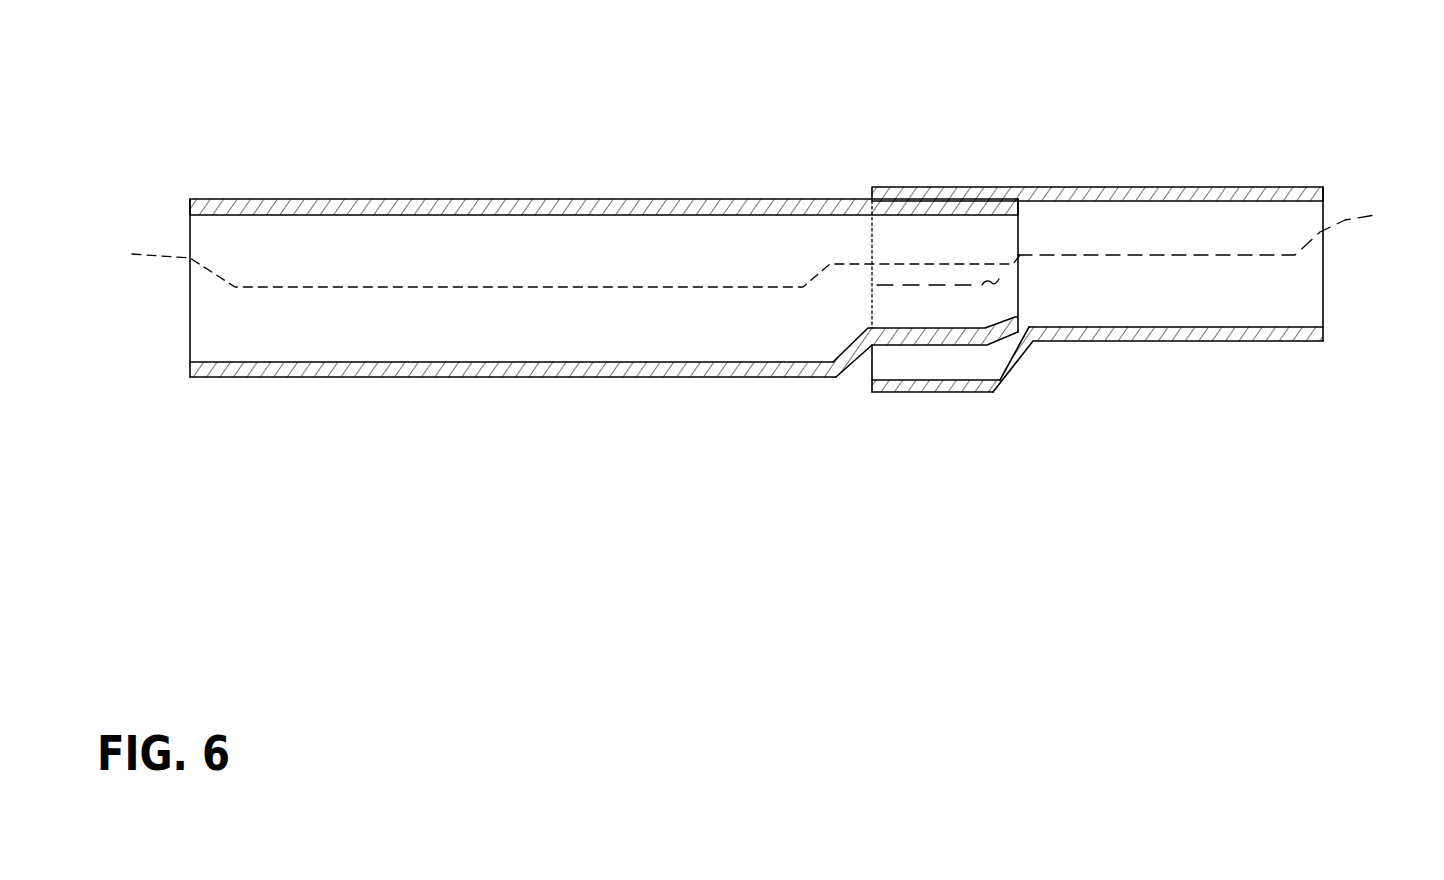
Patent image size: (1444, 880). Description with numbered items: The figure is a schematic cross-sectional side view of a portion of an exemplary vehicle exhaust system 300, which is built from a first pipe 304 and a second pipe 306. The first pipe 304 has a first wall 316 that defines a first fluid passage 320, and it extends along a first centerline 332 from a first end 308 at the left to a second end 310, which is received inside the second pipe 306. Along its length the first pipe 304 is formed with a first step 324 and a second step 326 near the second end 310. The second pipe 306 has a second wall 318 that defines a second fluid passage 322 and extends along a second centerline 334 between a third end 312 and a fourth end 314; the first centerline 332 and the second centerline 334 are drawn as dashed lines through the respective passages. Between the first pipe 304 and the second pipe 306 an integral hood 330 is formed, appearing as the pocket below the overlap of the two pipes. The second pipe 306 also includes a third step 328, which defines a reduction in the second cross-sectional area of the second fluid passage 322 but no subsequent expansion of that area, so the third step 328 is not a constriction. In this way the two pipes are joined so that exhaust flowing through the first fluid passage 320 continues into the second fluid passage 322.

The vehicle exhaust system 300 is at (222, 77).
The first pipe 304 is at (217, 393).
The second pipe 306 is at (1237, 362).
The first end 308 is at (190, 330).
The second end 310 is at (1020, 223).
The third end 312 is at (872, 366).
The fourth end 314 is at (1323, 292).
The first wall 316 is at (543, 200).
The second wall 318 is at (1259, 188).
The first fluid passage 320 is at (346, 228).
The second fluid passage 322 is at (1145, 228).
The first step 324 is at (848, 345).
The second step 326 is at (997, 323).
The third step 328 is at (1015, 360).
The integral hood 330 is at (909, 355).
The first centerline 332 is at (554, 264).
The second centerline 334 is at (1220, 227).